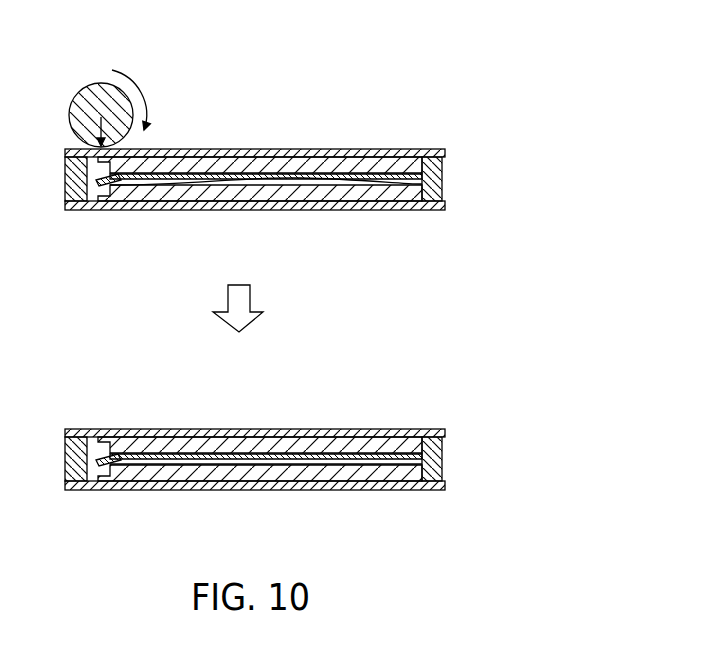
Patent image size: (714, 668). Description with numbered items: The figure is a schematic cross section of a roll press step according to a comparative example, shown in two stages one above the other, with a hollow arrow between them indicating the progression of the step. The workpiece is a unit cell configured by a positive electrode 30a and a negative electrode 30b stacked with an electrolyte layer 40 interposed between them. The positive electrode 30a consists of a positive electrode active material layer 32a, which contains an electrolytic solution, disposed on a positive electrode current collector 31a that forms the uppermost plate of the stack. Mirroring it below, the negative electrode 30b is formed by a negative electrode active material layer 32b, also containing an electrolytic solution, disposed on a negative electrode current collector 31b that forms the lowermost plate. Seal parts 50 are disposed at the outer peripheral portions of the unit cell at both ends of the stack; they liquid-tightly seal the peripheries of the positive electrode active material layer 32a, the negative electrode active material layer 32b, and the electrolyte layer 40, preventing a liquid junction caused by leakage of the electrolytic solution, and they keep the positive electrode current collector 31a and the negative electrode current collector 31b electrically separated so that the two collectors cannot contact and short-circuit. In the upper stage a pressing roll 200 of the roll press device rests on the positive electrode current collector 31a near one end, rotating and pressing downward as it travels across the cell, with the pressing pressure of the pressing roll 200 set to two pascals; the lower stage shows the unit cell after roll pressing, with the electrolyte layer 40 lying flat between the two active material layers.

The pressing roll 200 is at (92, 101).
The electrolyte layer 40 is at (325, 182).
The positive electrode current collector 31a is at (443, 151).
The positive electrode active material layer 32a is at (443, 161).
The positive electrode 30a is at (341, 261).
The seal part 50 is at (443, 178).
The negative electrode active material layer 32b is at (443, 193).
The negative electrode current collector 31b is at (445, 210).
The negative electrode 30b is at (333, 359).